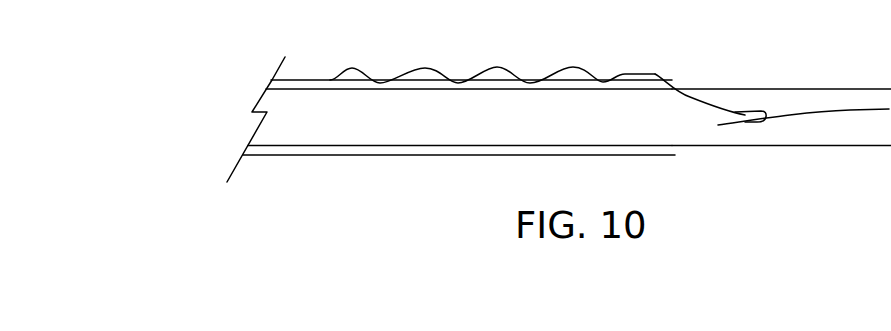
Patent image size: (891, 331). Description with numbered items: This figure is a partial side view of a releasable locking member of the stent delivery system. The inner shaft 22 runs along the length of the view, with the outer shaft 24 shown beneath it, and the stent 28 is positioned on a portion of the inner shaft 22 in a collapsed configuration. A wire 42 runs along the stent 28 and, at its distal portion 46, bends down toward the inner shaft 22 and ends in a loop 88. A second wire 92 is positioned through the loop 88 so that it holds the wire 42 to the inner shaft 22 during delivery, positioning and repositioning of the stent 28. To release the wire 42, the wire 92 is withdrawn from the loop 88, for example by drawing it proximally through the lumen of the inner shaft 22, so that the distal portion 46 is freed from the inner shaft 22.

The inner shaft 22 is at (797, 146).
The outer shaft 24 is at (375, 156).
The stent 28 is at (532, 78).
The wire 42 is at (438, 72).
The distal portion of the wire 46 is at (705, 103).
The loop 88 is at (754, 110).
The wire 92 is at (860, 112).